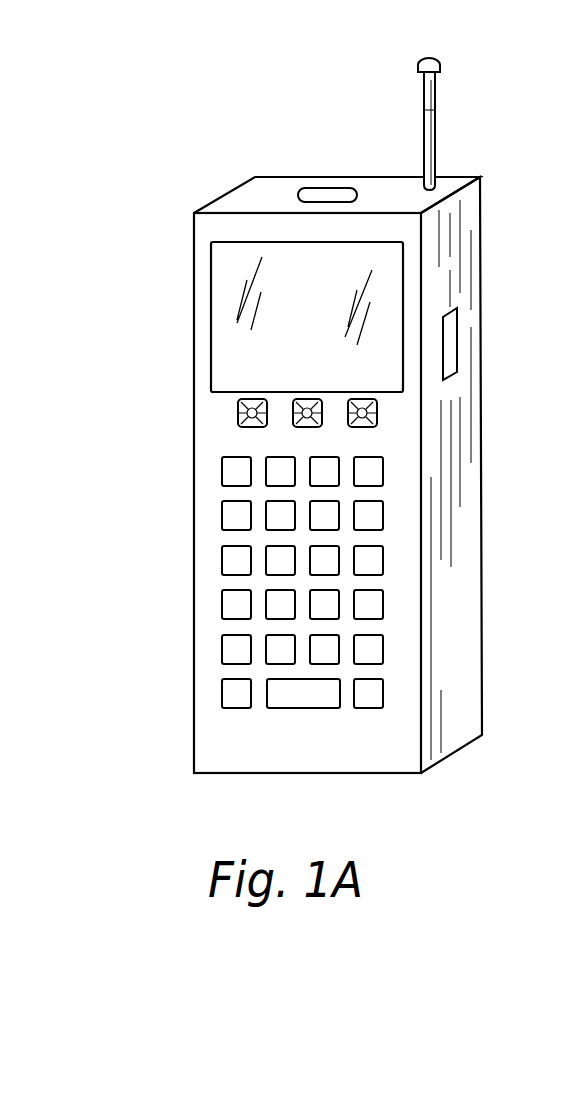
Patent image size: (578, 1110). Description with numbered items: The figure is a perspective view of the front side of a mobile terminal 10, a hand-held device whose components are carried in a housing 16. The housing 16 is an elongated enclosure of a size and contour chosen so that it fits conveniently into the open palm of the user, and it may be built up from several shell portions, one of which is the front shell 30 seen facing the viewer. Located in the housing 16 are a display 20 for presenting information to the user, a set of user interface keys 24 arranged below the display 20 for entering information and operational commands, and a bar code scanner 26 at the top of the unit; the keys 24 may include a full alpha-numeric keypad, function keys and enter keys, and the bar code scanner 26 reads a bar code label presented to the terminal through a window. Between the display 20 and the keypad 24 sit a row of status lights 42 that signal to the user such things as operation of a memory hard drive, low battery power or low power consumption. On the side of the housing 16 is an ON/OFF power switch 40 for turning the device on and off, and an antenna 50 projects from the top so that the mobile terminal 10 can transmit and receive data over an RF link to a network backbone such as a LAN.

The mobile terminal 10 is at (213, 177).
The housing 16 is at (468, 510).
The display 20 is at (228, 287).
The user interface keys 24 is at (240, 725).
The bar code scanner 26 is at (328, 192).
The front shell 30 is at (368, 743).
The ON/OFF power switch 40 is at (450, 330).
The status lights 42 is at (229, 422).
The antenna 50 is at (436, 112).